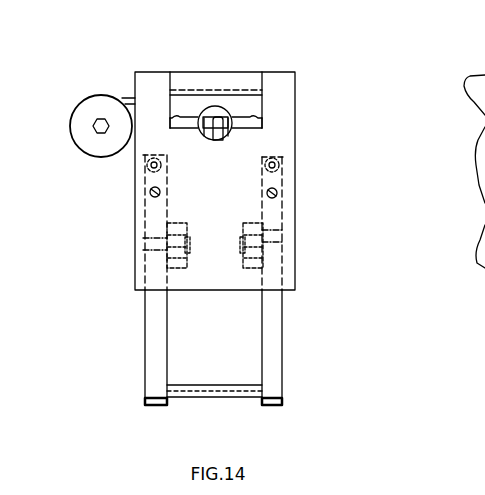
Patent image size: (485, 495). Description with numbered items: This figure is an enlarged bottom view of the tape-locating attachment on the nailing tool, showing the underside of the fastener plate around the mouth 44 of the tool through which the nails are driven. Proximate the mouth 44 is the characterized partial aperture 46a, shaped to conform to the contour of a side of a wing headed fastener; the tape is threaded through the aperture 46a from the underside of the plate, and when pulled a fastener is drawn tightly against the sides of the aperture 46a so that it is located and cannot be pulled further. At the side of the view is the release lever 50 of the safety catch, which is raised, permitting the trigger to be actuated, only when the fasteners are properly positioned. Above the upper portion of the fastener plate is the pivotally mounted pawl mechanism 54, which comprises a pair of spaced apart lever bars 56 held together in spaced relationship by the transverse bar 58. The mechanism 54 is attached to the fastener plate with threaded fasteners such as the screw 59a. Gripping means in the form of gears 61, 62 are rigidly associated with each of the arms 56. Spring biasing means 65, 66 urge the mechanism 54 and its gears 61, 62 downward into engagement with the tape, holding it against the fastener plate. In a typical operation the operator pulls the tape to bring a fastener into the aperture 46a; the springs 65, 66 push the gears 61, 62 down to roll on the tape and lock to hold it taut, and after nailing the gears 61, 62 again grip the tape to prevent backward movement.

The mouth 44 is at (218, 117).
The partial aperture 46a is at (228, 138).
The release lever 50 is at (72, 123).
The pawl mechanism 54 is at (283, 320).
The lever bars 56 is at (155, 325).
The transverse bar 58 is at (237, 397).
The screw 59a is at (276, 196).
The gear 61 is at (167, 228).
The gear 62 is at (272, 228).
The spring biasing means 65 is at (142, 173).
The spring biasing means 66 is at (282, 172).